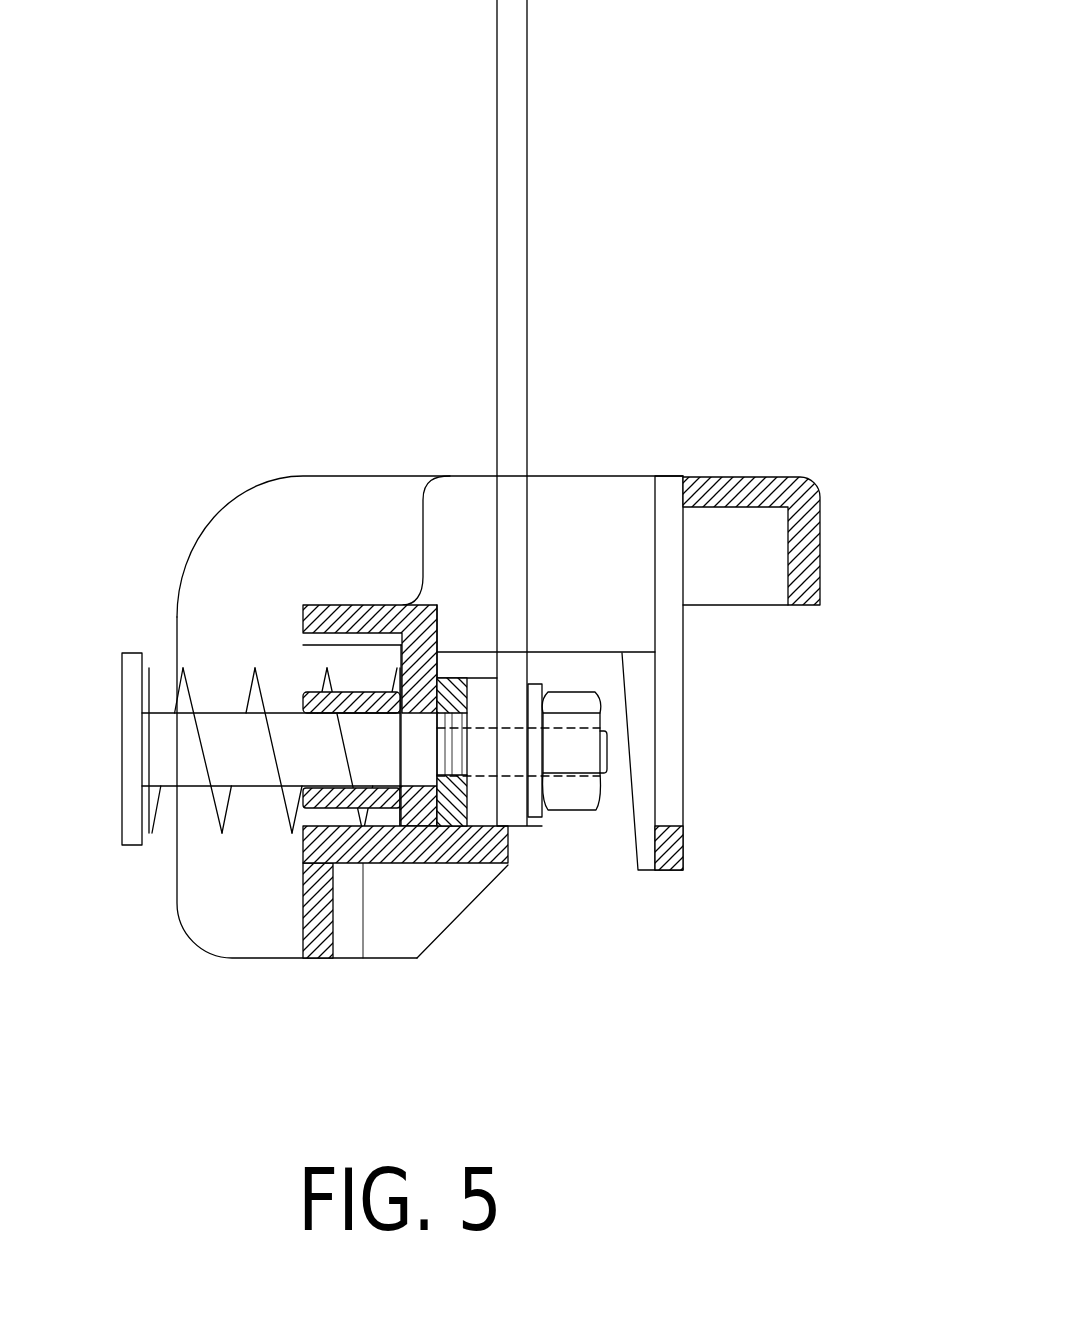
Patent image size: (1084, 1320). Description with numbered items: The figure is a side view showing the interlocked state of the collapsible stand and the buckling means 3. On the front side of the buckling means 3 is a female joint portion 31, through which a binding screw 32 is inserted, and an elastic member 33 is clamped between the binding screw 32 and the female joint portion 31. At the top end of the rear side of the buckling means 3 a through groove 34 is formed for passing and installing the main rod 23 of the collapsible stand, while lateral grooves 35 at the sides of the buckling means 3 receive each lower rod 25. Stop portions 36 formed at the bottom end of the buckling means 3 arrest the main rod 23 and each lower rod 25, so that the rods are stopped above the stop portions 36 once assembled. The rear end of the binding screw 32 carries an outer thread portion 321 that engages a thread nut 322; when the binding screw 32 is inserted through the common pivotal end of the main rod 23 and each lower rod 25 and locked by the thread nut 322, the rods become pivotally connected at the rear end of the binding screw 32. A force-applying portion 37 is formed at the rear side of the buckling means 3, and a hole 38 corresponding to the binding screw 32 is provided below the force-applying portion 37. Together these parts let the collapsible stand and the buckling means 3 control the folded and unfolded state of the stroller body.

The buckling means 3 is at (232, 503).
The main rod 23 is at (527, 240).
The lower rod 25 is at (462, 845).
The female joint portion 31 is at (307, 692).
The binding screw 32 is at (122, 740).
The elastic member 33 is at (214, 815).
The through groove 34 is at (438, 622).
The lateral groove 35 is at (658, 710).
The stop portion 36 is at (498, 882).
The force-applying portion 37 is at (822, 530).
The hole 38 is at (676, 823).
The outer thread portion 321 is at (457, 753).
The thread nut 322 is at (597, 808).